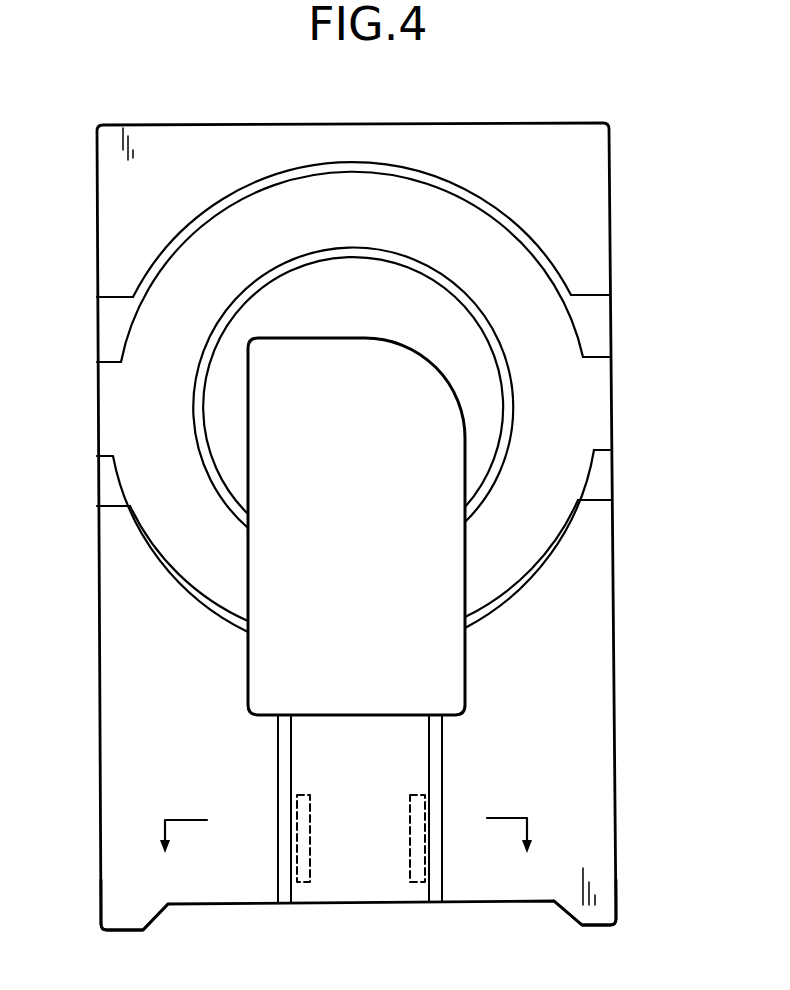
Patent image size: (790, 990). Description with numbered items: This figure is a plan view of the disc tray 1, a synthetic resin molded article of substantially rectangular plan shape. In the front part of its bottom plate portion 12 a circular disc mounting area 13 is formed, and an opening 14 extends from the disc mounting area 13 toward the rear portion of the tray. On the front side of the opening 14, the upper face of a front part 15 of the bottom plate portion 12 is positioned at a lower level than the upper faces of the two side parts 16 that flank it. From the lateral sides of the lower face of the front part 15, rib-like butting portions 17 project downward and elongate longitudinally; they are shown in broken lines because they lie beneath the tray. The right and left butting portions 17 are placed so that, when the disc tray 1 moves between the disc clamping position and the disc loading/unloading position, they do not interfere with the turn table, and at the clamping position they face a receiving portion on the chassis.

The disc tray 1 is at (628, 239).
The bottom plate portion 12 is at (597, 621).
The disc mounting area 13 is at (370, 187).
The opening 14 is at (462, 455).
The front part of the bottom plate portion 15 is at (410, 735).
The side parts 16 is at (120, 752).
The butting portions 17 is at (285, 822).